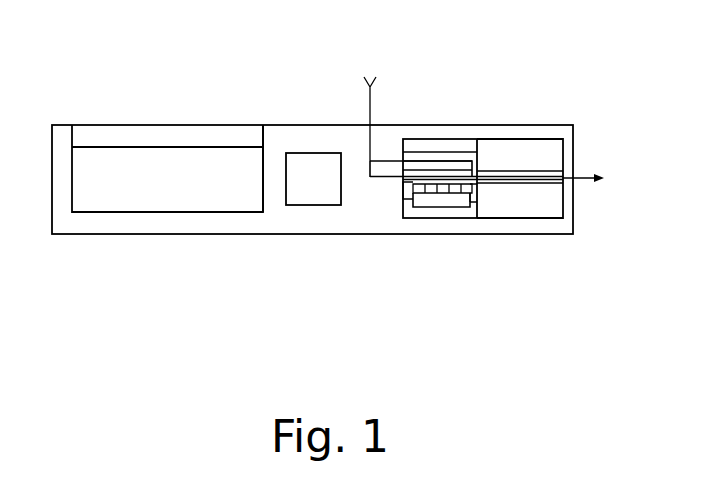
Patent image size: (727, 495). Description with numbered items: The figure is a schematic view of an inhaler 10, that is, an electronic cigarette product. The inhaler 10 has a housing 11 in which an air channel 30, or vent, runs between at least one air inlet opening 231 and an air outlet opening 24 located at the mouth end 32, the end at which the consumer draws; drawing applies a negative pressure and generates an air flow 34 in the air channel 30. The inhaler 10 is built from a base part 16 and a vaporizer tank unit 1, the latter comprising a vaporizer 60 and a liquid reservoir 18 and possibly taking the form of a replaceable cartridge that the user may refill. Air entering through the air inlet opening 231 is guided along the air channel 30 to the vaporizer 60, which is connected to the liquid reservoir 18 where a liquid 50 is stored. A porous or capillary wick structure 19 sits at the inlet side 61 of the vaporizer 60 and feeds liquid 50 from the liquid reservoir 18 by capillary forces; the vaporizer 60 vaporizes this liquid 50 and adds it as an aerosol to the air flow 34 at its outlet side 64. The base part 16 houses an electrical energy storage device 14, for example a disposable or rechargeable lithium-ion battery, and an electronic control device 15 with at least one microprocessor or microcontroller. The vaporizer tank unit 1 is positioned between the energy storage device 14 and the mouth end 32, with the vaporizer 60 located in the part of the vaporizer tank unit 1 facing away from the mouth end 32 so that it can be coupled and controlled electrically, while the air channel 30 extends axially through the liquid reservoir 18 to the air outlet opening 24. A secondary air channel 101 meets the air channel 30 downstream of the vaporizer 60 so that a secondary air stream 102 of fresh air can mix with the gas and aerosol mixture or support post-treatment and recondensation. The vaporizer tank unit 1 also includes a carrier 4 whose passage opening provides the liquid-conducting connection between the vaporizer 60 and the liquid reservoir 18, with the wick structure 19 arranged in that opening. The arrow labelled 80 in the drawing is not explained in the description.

The vaporizer tank unit 1 is at (445, 240).
The carrier 4 is at (400, 190).
The inhaler 10 is at (309, 325).
The housing 11 is at (165, 236).
The electrical energy storage device 14 is at (171, 191).
The electronic control device 15 is at (328, 191).
The base part 16 is at (265, 245).
The liquid reservoir 18 is at (517, 223).
The wick structure 19 is at (455, 210).
The air outlet opening 24 is at (582, 182).
The air channel 30 is at (567, 192).
The mouth end 32 is at (578, 135).
The air flow 34 is at (365, 152).
The liquid 50 is at (524, 168).
The vaporizer 60 is at (418, 205).
The inlet side 61 is at (431, 196).
The outlet side 64 is at (458, 168).
The flow direction 80 is at (611, 191).
The secondary air channel 101 is at (424, 155).
The secondary air stream 102 is at (437, 163).
The air inlet opening 231 is at (372, 122).